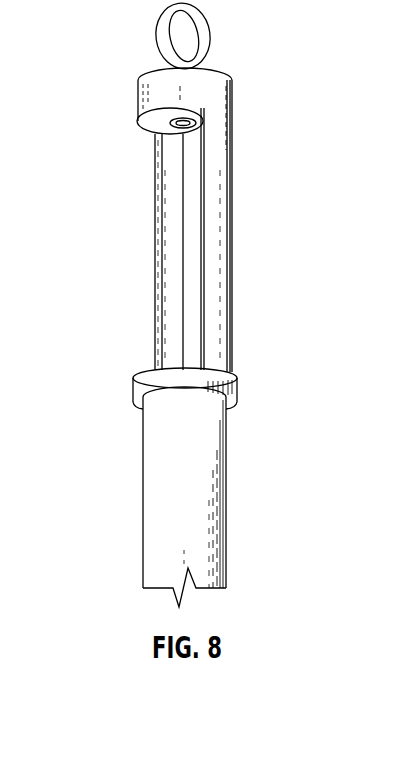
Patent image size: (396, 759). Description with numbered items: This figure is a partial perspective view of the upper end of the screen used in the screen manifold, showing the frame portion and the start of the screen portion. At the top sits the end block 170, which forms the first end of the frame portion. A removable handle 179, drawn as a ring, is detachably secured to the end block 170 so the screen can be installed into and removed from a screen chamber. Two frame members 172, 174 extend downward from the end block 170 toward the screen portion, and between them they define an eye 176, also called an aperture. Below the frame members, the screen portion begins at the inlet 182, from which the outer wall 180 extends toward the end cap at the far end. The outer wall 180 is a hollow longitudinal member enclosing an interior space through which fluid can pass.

The end block 170 is at (138, 98).
The frame member 172 is at (162, 183).
The frame member 174 is at (212, 221).
The eye 176 is at (188, 238).
The removable handle 179 is at (203, 25).
The outer wall 180 is at (213, 542).
The inlet 182 is at (172, 363).